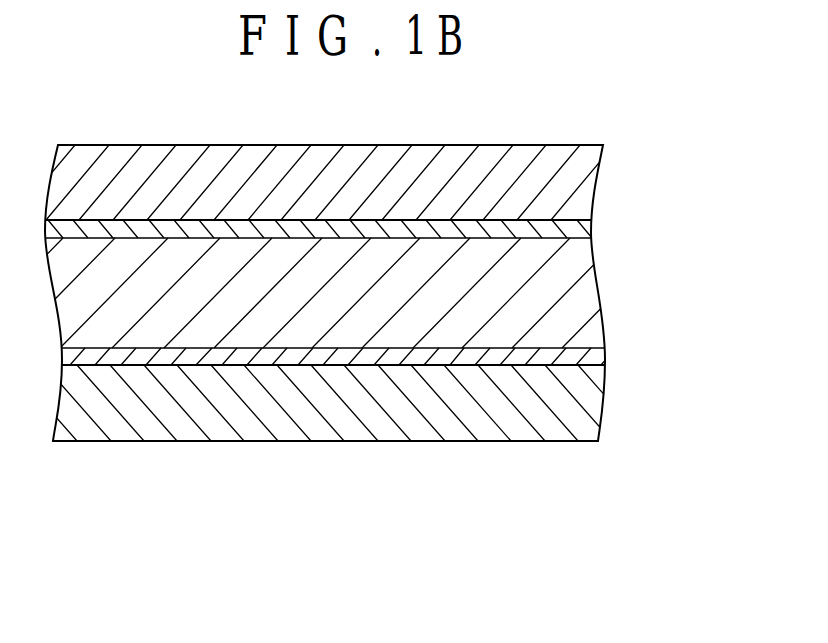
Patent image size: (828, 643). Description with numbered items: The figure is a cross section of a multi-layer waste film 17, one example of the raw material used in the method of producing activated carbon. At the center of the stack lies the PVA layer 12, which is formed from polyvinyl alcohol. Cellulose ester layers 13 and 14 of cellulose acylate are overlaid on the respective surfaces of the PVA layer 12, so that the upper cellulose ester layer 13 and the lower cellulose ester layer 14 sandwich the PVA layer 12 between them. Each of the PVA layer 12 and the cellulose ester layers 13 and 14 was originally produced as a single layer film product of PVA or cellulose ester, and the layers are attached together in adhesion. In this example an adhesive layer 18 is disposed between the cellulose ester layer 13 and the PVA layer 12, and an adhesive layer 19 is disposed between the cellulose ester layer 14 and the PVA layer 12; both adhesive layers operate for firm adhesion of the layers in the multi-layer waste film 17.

The PVA layer 12 is at (578, 292).
The cellulose ester layer 13 is at (577, 173).
The cellulose ester layer 14 is at (577, 405).
The multi-layer waste film 17 is at (381, 490).
The adhesive layer 18 is at (585, 230).
The adhesive layer 19 is at (603, 353).